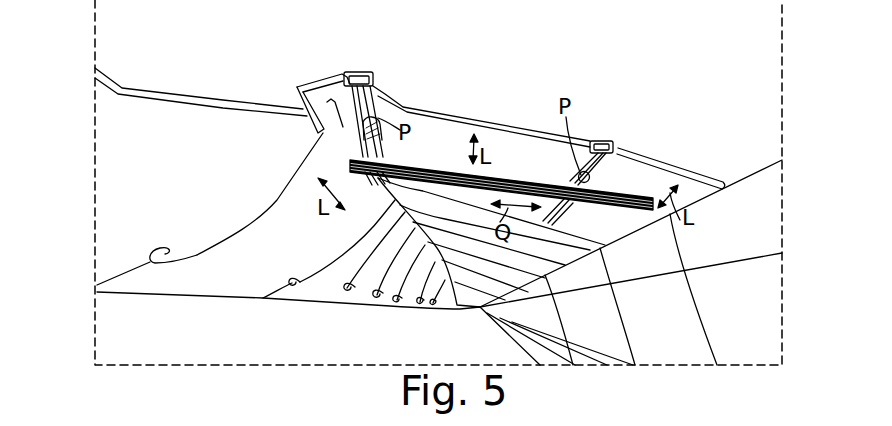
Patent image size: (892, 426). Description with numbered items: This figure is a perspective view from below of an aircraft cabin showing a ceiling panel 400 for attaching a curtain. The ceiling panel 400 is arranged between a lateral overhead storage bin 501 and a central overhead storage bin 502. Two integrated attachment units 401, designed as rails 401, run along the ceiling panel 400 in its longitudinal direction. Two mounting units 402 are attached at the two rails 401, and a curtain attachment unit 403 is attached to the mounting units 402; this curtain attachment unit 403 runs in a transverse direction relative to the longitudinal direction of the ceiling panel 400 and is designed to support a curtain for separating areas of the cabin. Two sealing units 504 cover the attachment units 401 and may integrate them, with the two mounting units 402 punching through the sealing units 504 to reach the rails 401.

The ceiling panel 400 is at (696, 158).
The attachment unit 401 is at (358, 82).
The mounting unit 402 is at (367, 133).
The curtain attachment unit 403 is at (486, 182).
The lateral overhead storage bin 501 is at (765, 213).
The central overhead storage bin 502 is at (113, 147).
The sealing unit 504 is at (358, 139).